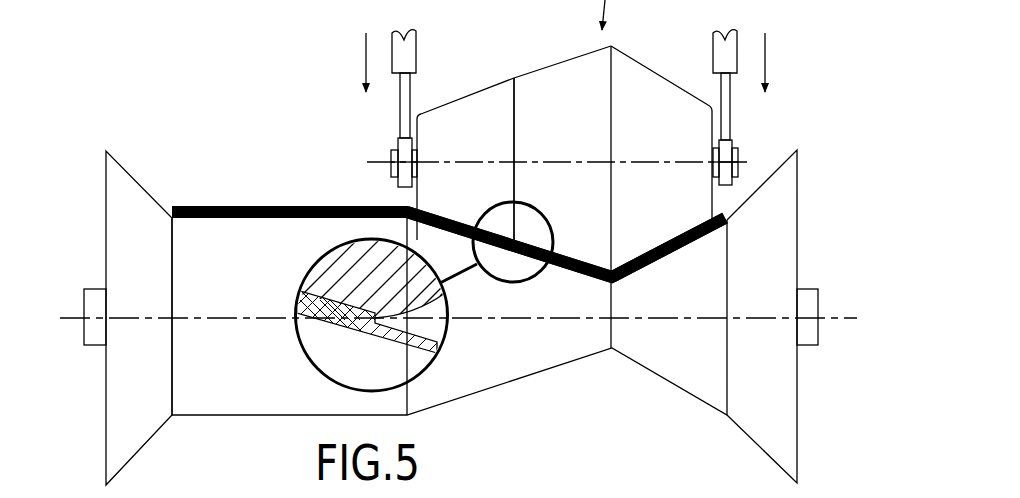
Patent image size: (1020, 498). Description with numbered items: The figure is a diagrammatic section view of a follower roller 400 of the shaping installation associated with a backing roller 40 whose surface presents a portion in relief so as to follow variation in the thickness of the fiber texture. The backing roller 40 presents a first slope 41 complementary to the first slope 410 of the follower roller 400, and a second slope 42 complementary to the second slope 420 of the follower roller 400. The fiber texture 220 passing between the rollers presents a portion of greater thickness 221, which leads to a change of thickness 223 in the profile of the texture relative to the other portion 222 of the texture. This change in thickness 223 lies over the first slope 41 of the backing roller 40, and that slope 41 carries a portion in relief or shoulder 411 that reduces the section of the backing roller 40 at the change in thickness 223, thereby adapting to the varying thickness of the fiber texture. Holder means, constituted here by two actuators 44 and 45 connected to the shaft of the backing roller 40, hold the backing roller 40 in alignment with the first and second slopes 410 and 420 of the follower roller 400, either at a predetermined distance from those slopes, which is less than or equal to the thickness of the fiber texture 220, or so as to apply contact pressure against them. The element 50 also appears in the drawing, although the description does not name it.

The backing roller 40 is at (748, 160).
The first slope 41 is at (567, 60).
The second slope 42 is at (659, 74).
The actuator 44 is at (407, 40).
The actuator 45 is at (728, 40).
The base 50 is at (590, 497).
The fiber texture 220 is at (252, 206).
The portion of greater thickness 221 is at (297, 291).
The other portion of the texture 222 is at (437, 352).
The change of thickness 223 is at (375, 315).
The follower roller 400 is at (268, 428).
The first slope 410 is at (545, 268).
The portion in relief or shoulder 411 is at (514, 78).
The second slope 420 is at (678, 250).